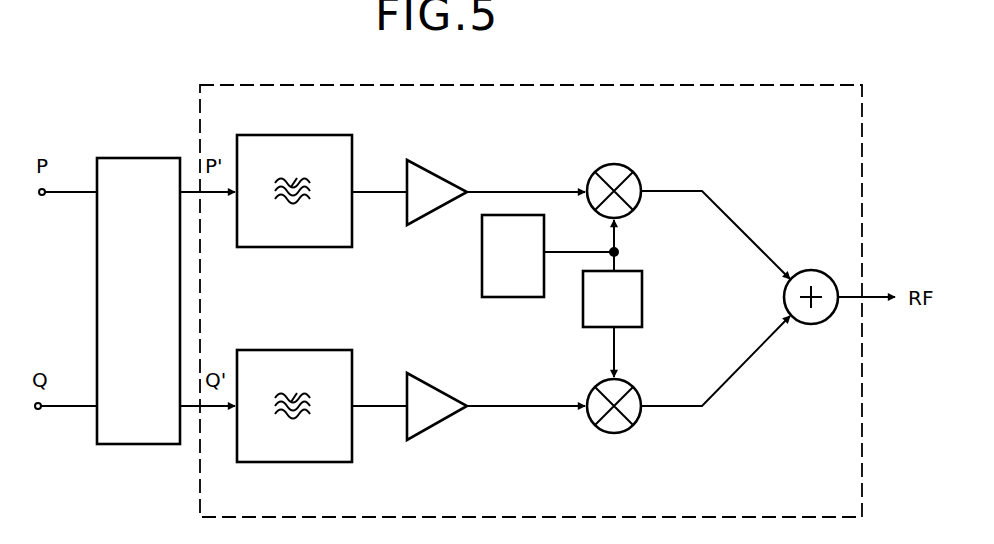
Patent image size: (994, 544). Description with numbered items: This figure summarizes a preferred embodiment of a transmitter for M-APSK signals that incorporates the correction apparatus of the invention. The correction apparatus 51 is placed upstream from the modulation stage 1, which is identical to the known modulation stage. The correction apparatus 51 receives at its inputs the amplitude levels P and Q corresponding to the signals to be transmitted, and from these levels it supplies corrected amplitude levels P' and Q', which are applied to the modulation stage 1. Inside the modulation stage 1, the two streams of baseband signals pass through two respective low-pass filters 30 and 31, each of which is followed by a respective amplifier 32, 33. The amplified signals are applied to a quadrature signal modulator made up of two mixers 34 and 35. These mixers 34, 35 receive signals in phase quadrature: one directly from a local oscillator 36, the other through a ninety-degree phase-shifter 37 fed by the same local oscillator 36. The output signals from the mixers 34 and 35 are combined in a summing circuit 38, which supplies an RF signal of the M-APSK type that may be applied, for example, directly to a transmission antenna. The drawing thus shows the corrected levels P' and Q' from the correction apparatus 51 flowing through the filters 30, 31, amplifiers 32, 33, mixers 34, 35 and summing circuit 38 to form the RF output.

The modulation stage 1 is at (688, 83).
The low-pass filter 30 is at (318, 135).
The low-pass filter 31 is at (275, 350).
The amplifier 32 is at (430, 163).
The amplifier 33 is at (443, 419).
The mixer 34 is at (628, 166).
The mixer 35 is at (634, 428).
The local oscillator 36 is at (482, 262).
The 90° phase-shifter 37 is at (642, 297).
The summing circuit 38 is at (818, 270).
The correction apparatus 51 is at (122, 157).